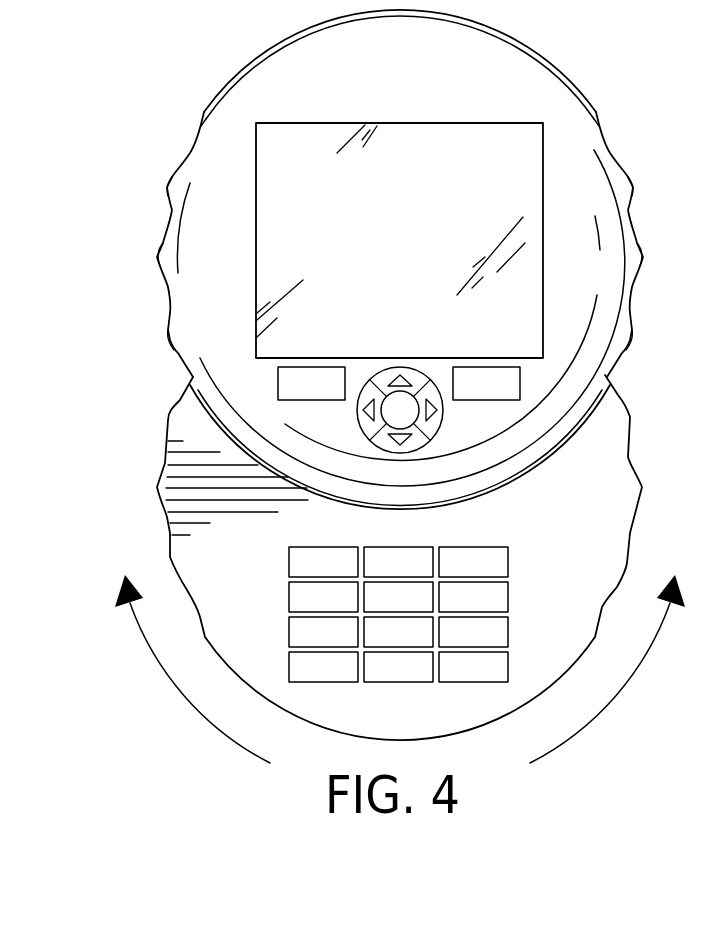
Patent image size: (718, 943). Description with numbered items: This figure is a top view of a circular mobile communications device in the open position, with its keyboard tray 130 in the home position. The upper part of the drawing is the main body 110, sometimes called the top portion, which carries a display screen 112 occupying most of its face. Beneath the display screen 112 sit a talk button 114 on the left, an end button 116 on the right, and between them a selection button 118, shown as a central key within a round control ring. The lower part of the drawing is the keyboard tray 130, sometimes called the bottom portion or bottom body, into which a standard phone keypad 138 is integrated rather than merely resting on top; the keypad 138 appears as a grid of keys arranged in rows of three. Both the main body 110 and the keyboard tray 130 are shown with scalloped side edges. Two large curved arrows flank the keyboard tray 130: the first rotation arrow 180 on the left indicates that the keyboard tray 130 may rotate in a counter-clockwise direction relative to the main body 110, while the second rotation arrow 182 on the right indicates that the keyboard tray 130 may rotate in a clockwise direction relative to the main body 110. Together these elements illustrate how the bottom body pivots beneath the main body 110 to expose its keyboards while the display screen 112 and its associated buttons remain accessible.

The main body 110 is at (597, 80).
The display screen 112 is at (400, 123).
The talk button 114 is at (298, 367).
The end button 116 is at (470, 367).
The selection button 118 is at (386, 390).
The keyboard tray 130 is at (650, 452).
The standard phone keypad 138 is at (535, 560).
The first rotation arrow 180 is at (222, 742).
The second rotation arrow 182 is at (577, 744).